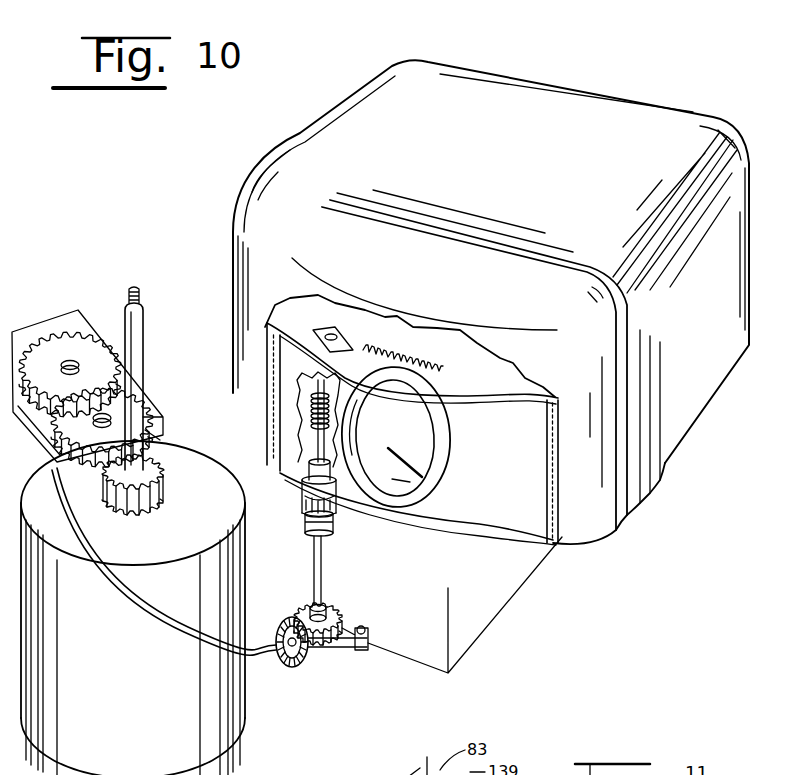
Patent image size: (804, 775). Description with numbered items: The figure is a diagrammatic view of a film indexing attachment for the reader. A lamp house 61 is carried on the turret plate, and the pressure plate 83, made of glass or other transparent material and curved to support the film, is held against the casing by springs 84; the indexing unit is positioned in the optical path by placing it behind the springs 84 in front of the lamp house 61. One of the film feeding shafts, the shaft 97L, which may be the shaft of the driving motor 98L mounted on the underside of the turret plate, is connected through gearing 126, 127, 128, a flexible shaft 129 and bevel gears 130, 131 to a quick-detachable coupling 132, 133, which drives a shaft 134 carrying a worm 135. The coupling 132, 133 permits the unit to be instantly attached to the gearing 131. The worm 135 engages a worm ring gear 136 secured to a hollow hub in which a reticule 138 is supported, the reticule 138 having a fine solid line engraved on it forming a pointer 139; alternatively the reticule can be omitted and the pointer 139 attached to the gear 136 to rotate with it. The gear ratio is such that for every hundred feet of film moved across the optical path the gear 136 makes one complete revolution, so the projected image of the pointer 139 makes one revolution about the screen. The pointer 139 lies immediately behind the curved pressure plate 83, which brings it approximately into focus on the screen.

The lamp house 61 is at (570, 312).
The pressure plate 83 is at (490, 390).
The springs 84 is at (273, 362).
The feeding shaft 97L is at (140, 333).
The driving motor 98L is at (228, 730).
The gearing 126 is at (162, 470).
The gearing 127 is at (145, 415).
The gearing 128 is at (55, 340).
The flexible shaft 129 is at (123, 595).
The bevel gear 130 is at (280, 667).
The bevel gear 131 is at (335, 607).
The quick-detachable coupling 132 is at (302, 523).
The quick-detachable coupling 133 is at (303, 486).
The shaft 134 is at (313, 448).
The worm 135 is at (312, 412).
The worm ring gear 136 is at (412, 352).
The reticule 138 is at (393, 479).
The pointer 139 is at (405, 455).